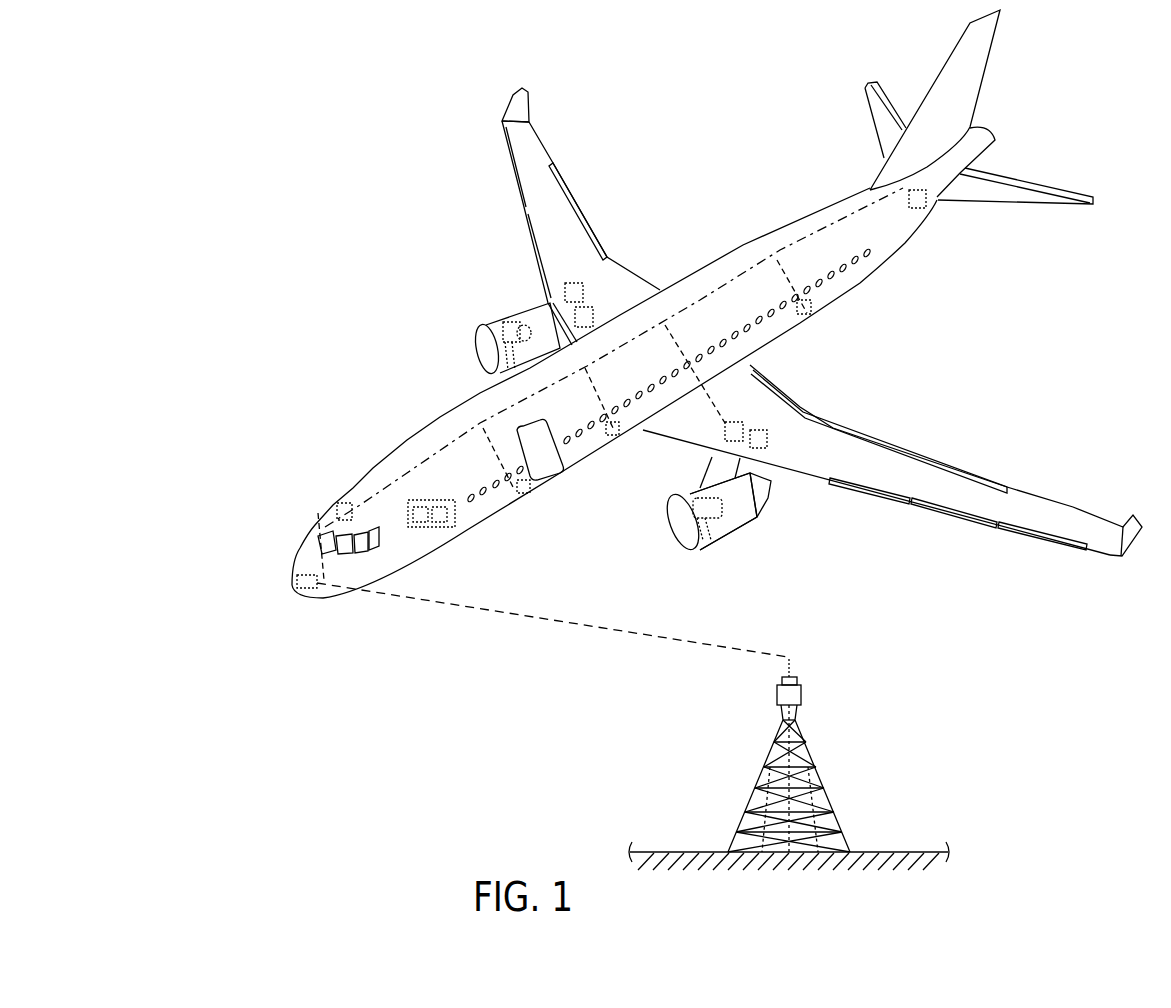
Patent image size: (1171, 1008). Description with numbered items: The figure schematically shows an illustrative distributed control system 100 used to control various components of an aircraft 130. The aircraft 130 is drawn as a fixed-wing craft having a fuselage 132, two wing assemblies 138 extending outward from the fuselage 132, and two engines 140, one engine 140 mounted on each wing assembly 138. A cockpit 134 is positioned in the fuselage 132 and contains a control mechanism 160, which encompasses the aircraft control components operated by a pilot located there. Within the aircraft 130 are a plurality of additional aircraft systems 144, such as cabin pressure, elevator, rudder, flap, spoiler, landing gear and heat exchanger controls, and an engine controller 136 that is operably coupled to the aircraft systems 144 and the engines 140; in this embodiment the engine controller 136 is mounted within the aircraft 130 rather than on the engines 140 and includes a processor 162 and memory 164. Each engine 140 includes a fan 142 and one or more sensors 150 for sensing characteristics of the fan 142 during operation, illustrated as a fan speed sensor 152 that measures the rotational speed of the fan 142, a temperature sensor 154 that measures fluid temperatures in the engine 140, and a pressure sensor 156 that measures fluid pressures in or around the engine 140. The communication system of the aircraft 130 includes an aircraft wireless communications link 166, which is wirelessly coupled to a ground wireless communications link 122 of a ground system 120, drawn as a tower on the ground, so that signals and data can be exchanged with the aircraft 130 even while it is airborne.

The distributed control system 100 is at (355, 173).
The ground system 120 is at (789, 741).
The ground wireless communications link 122 is at (798, 658).
The aircraft 130 is at (666, 333).
The fuselage 132 is at (744, 244).
The cockpit 134 is at (335, 512).
The engine controller 136 is at (440, 507).
The wing assemblies 138 is at (525, 143).
The engines 140 is at (575, 448).
The fan 142 is at (479, 338).
The additional aircraft systems 144 is at (527, 494).
The sensors 150 is at (775, 504).
The fan speed sensor 152 is at (508, 326).
The temperature sensor 154 is at (593, 310).
The pressure sensor 156 is at (572, 283).
The control mechanism 160 is at (345, 502).
The processor 162 is at (455, 527).
The memory 164 is at (462, 525).
The aircraft wireless communications link 166 is at (297, 586).